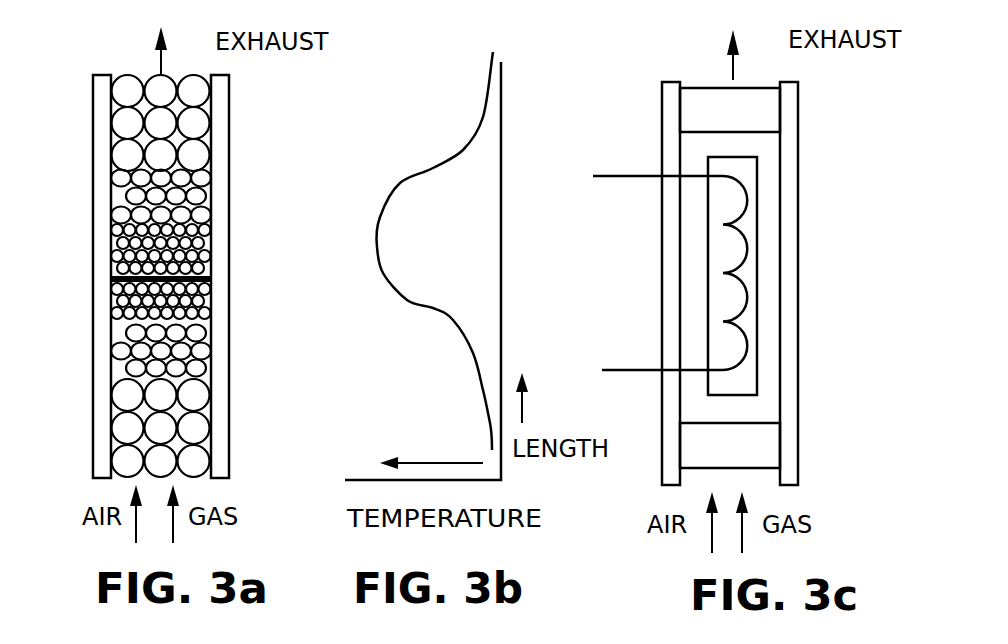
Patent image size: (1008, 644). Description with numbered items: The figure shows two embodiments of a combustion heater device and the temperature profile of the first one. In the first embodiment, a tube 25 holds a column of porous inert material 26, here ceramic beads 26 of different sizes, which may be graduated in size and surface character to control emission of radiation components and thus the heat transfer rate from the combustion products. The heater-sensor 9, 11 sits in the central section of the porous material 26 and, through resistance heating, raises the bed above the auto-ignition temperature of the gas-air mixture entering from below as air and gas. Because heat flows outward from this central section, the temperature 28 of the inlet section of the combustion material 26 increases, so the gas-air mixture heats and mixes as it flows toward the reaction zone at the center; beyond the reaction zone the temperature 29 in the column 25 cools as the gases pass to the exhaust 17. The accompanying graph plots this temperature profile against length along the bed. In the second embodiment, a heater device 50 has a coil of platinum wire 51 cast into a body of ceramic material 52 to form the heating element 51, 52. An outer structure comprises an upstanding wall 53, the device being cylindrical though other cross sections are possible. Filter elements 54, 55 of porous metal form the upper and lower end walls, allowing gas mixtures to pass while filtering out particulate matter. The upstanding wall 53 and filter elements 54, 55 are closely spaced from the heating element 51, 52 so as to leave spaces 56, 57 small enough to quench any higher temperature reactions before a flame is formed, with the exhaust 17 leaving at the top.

In FIG. 3A, the heater-sensor 9 is at (120, 244).
In FIG. 3A, the heater-sensor 11 is at (111, 276).
In FIG. 3A, the exhaust 17 is at (157, 63).
In FIG. 3C, the exhaust 17 is at (732, 70).
In FIG. 3A, the tube 25 is at (230, 177).
In FIG. 3A, the porous inert material 26 is at (212, 308).
In FIG. 3B, the inlet section temperature 28 is at (470, 355).
In FIG. 3B, the exhaust section temperature 29 is at (453, 153).
In FIG. 3C, the heater device 50 is at (715, 273).
In FIG. 3C, the coil of platinum wire 51 is at (745, 350).
In FIG. 3C, the body of ceramic material 52 is at (757, 307).
In FIG. 3C, the upstanding wall 53 is at (798, 217).
In FIG. 3C, the filter element 54 is at (730, 110).
In FIG. 3C, the filter element 55 is at (730, 445).
In FIG. 3C, the space 56 is at (739, 142).
In FIG. 3C, the space 57 is at (693, 318).